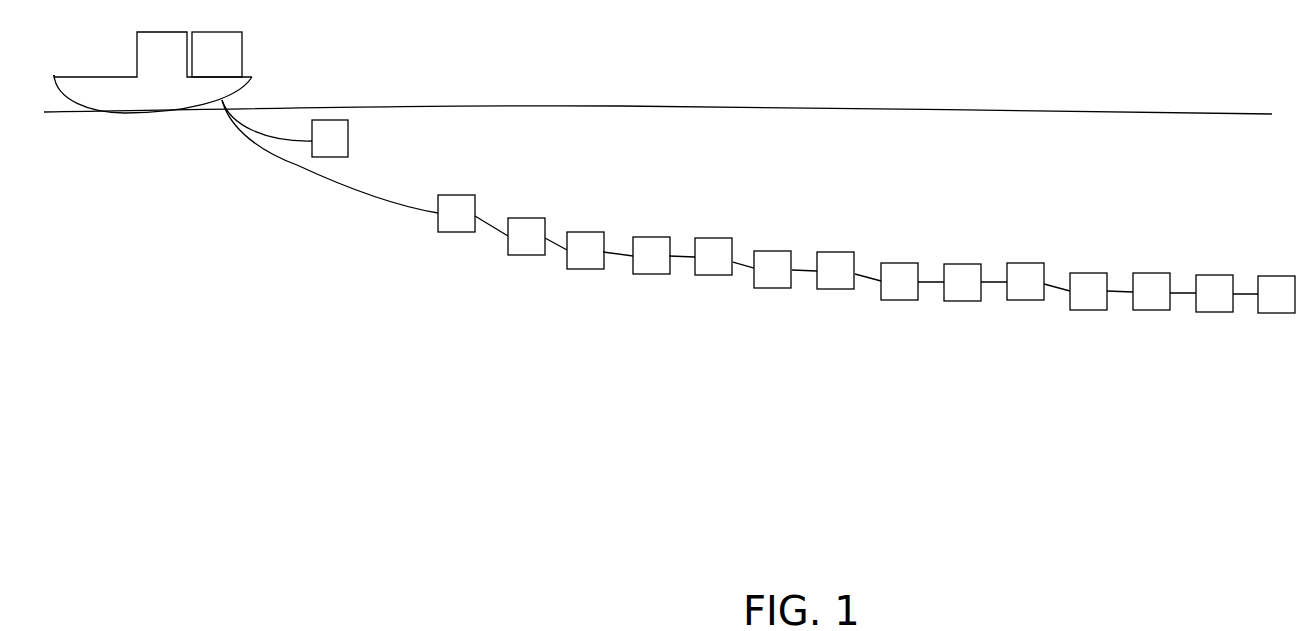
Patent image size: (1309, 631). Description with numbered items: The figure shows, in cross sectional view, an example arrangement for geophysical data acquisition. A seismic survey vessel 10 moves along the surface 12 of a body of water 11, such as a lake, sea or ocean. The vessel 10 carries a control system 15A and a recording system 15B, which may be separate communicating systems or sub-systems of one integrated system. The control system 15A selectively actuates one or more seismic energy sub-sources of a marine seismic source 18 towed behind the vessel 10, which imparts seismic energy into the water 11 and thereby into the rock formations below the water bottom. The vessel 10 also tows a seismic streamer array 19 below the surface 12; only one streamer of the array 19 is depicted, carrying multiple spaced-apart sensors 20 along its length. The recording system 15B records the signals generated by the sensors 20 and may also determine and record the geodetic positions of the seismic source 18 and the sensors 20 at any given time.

The seismic survey vessel 10 is at (153, 72).
The body of water 11 is at (229, 427).
The surface of the body of water 12 is at (733, 93).
The control system 15A is at (217, 54).
The recording system 15B is at (217, 54).
The marine seismic source 18 is at (285, 128).
The seismic streamer array 19 is at (873, 258).
The sensors 20 is at (866, 254).